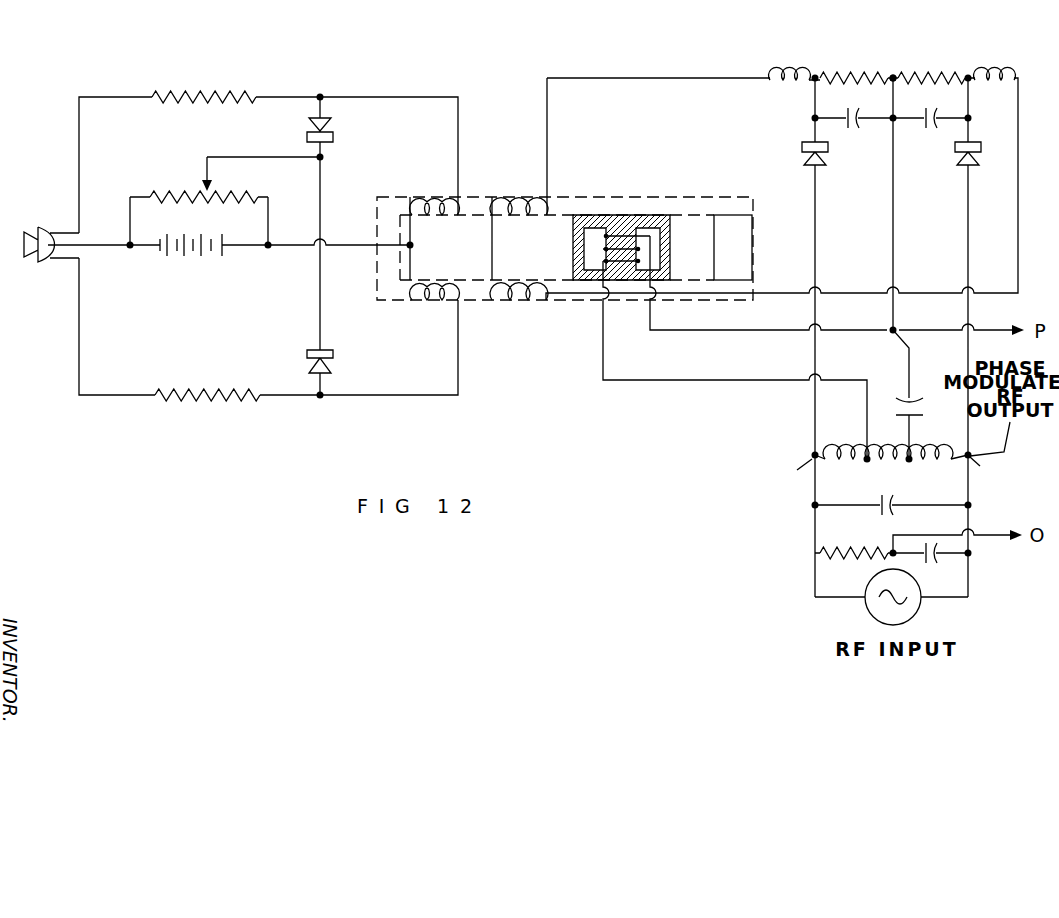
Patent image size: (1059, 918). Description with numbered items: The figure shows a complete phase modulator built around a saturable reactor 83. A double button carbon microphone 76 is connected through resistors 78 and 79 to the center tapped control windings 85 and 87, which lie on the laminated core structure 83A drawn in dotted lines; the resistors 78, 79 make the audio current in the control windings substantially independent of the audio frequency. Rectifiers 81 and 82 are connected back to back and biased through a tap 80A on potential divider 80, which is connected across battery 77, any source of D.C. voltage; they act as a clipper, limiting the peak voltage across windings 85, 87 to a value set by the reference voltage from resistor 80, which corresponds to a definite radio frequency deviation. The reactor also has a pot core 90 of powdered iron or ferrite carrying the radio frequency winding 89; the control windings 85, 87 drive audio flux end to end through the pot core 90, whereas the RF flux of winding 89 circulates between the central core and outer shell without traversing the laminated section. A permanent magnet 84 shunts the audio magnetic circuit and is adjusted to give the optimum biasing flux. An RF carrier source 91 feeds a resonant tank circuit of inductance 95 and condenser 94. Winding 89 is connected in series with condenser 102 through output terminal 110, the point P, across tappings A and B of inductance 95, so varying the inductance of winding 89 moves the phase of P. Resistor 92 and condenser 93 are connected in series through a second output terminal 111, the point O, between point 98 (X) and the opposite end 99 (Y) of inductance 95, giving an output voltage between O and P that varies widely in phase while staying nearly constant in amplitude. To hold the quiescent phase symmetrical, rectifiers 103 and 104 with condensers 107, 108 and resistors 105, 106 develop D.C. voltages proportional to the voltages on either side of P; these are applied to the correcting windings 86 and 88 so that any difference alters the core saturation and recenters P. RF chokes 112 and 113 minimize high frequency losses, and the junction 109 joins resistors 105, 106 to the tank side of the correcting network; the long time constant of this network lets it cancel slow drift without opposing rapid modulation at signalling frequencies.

The double button carbon microphone 76 is at (46, 231).
The battery 77 is at (186, 256).
The resistor 78 is at (214, 94).
The resistor 79 is at (223, 399).
The potential divider 80 is at (204, 208).
The tap 80A is at (205, 183).
The rectifier 81 is at (336, 134).
The rectifier 82 is at (334, 353).
The saturable reactor 83 is at (447, 256).
The laminated core structure 83A is at (630, 197).
The permanent magnet 84 is at (753, 258).
The control winding 85 is at (453, 197).
The correcting winding 86 is at (516, 197).
The control winding 87 is at (428, 304).
The correcting winding 88 is at (502, 304).
The winding 89 is at (603, 262).
The pot core 90 is at (662, 256).
The RF carrier source 91 is at (909, 600).
The resistor 92 is at (859, 550).
The condenser 93 is at (937, 557).
The condenser 94 is at (898, 506).
The inductance 95 is at (896, 463).
The point X 98 is at (813, 453).
The terminal Y 99 is at (971, 454).
The condenser 102 is at (911, 403).
The rectifier 103 is at (801, 148).
The rectifier 104 is at (982, 146).
The resistor 105 is at (861, 74).
The resistor 106 is at (934, 74).
The condenser 107 is at (856, 126).
The condenser 108 is at (928, 126).
The junction 109 is at (893, 76).
The output terminal P 110 is at (896, 329).
The second output terminal O 111 is at (895, 551).
The RF choke 112 is at (790, 72).
The RF choke 113 is at (995, 62).